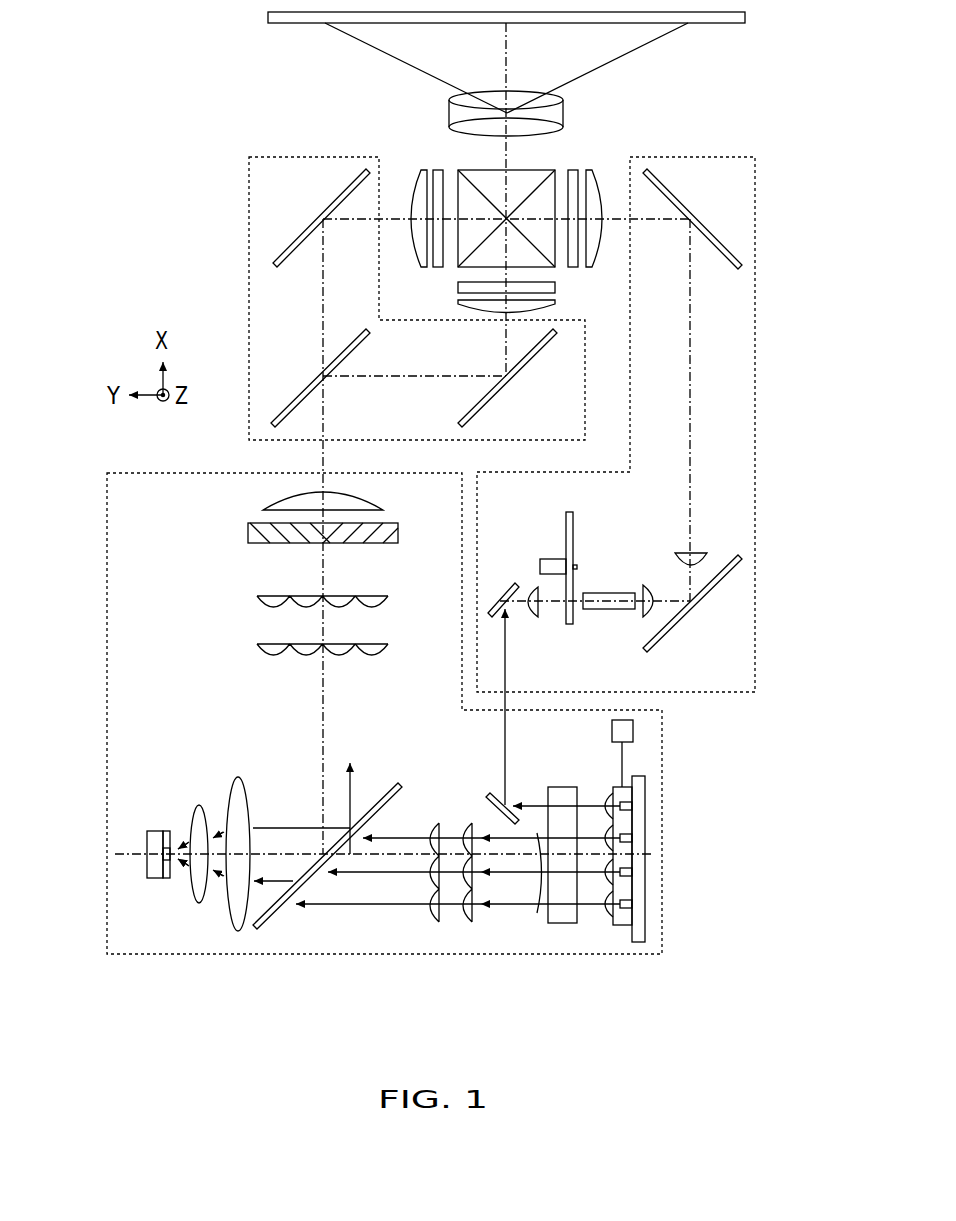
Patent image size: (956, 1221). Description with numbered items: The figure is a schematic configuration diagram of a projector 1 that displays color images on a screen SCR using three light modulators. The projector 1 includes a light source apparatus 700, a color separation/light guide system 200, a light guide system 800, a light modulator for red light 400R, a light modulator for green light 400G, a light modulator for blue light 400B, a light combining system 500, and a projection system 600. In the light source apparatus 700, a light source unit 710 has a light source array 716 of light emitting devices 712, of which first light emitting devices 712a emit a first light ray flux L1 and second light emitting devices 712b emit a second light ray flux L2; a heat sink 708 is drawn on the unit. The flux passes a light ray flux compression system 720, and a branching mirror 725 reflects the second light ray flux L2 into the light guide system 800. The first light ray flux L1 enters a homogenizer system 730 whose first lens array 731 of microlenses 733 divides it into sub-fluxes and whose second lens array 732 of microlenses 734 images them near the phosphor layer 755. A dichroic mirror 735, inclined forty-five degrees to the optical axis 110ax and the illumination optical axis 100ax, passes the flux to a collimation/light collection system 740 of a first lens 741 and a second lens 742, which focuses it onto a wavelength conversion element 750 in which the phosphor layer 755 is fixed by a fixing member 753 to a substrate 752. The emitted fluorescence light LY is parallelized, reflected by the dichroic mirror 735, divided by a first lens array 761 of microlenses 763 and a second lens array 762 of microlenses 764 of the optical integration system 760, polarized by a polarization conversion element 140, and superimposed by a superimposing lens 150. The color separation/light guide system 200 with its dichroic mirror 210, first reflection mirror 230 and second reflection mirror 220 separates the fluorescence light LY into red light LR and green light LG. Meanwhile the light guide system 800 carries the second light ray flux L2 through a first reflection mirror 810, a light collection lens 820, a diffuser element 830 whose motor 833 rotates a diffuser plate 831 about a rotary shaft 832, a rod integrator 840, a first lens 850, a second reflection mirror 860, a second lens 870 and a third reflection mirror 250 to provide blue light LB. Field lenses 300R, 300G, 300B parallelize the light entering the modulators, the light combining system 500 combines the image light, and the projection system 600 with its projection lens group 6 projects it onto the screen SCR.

The projector 1 is at (236, 91).
The screen SCR is at (720, 24).
The projection lens group 6 is at (507, 98).
The projection system 600 is at (449, 115).
The light combining system 500 is at (547, 169).
The light modulator for red light 400R is at (440, 168).
The light modulator for green light 400G is at (458, 287).
The light modulator for blue light 400B is at (574, 168).
The field lens 300R is at (422, 168).
The field lens 300G is at (458, 305).
The field lens 300B is at (593, 169).
The red light LR is at (398, 219).
The green light LG is at (420, 376).
The blue light LB is at (615, 219).
The color separation/light guide system 200 is at (249, 251).
The dichroic mirror 210 is at (295, 397).
The second reflection mirror 220 is at (490, 402).
The first reflection mirror 230 is at (276, 258).
The third reflection mirror 250 is at (738, 262).
The illumination optical axis 100ax is at (321, 465).
The superimposing lens 150 is at (380, 498).
The polarization conversion element 140 is at (385, 527).
The optical integration system 760 is at (187, 582).
The first lens array 761 is at (249, 645).
The second lens array 762 is at (249, 596).
The microlenses 763 is at (388, 650).
The microlenses 764 is at (388, 600).
The light source apparatus 700 is at (662, 765).
The light guide system 800 is at (755, 693).
The first reflection mirror 810 is at (500, 583).
The light collection lens 820 is at (530, 618).
The diffuser element 830 is at (580, 546).
The diffuser plate 831 is at (569, 625).
The rotary shaft 832 is at (577, 567).
The motor 833 is at (550, 559).
The rod integrator 840 is at (610, 610).
The first lens 850 is at (648, 585).
The second reflection mirror 860 is at (690, 616).
The second lens 870 is at (697, 553).
The heat sink 708 is at (612, 728).
The light source unit 710 is at (624, 936).
The light emitting devices 712 is at (676, 855).
The first light emitting devices 712a is at (632, 904).
The second light emitting devices 712b is at (632, 806).
The light source array 716 is at (617, 918).
The light ray flux compression system 720 is at (562, 924).
The branching mirror 725 is at (493, 795).
The homogenizer system 730 is at (492, 985).
The first lens array 731 is at (476, 931).
The second lens array 732 is at (437, 931).
The microlenses 733 is at (468, 823).
The microlenses 734 is at (433, 823).
The dichroic mirror 735 is at (386, 790).
The optical axis 110ax is at (297, 852).
The first light ray flux L1 is at (536, 914).
The second light ray flux L2 is at (533, 805).
The fluorescence light LY is at (263, 827).
The collimation/light collection system 740 is at (263, 726).
The first lens 741 is at (202, 805).
The second lens 742 is at (238, 777).
The wavelength conversion element 750 is at (174, 823).
The substrate 752 is at (155, 831).
The fixing member 753 is at (167, 880).
The phosphor layer 755 is at (165, 876).